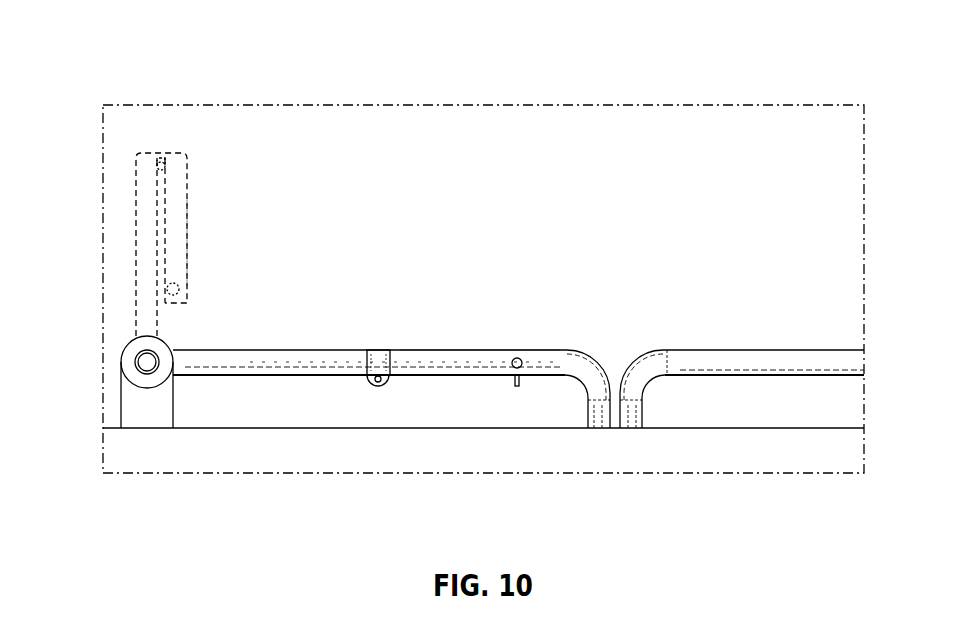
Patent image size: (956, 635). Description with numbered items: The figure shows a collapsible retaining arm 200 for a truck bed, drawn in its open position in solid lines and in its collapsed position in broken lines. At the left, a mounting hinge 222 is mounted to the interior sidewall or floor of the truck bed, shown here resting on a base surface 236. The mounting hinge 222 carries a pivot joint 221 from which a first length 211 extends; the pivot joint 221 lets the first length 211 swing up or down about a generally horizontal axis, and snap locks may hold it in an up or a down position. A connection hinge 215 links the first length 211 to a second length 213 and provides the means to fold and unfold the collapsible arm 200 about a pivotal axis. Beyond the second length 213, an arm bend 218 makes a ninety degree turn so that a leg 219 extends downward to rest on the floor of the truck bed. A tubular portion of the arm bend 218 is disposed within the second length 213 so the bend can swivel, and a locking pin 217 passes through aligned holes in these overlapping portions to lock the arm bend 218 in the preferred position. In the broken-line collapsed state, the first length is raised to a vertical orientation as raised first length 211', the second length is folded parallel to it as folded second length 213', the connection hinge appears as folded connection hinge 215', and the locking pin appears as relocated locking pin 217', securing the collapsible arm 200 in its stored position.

The collapsible retaining arm 200 is at (169, 45).
The first length 211 is at (370, 333).
The arm in raised position 211' is at (112, 252).
The second length 213 is at (480, 324).
The arm segment in raised position 213' is at (225, 245).
The connection hinge 215 is at (393, 338).
The clamp in raised position 215' is at (187, 117).
The locking pin 217 is at (532, 342).
The pin in raised position 217' is at (219, 275).
The arm bend 218 is at (591, 375).
The leg 219 is at (600, 414).
The pivot joint 221 is at (146, 363).
The mounting hinge 222 is at (135, 404).
The base 236 is at (227, 428).